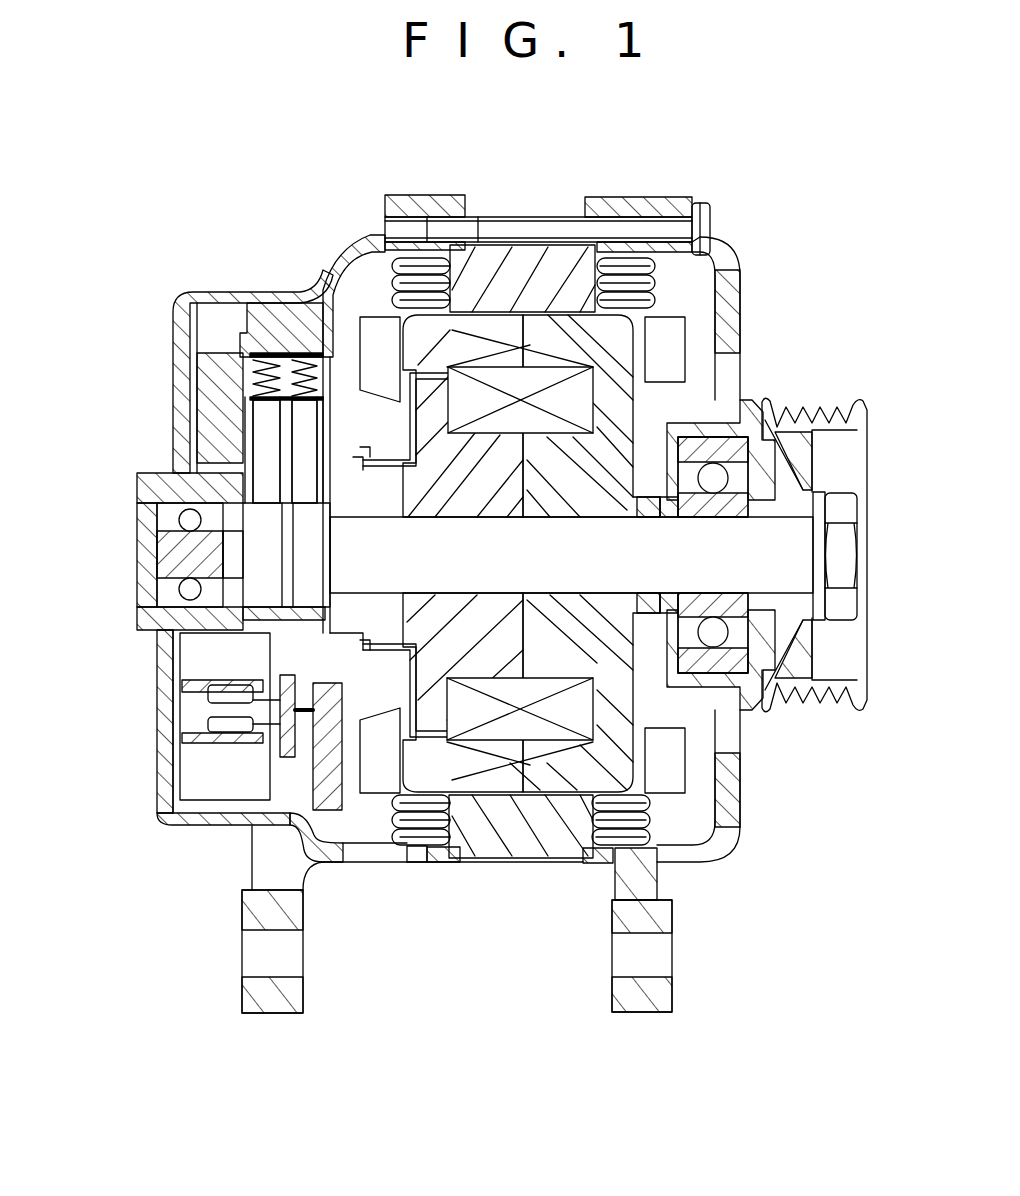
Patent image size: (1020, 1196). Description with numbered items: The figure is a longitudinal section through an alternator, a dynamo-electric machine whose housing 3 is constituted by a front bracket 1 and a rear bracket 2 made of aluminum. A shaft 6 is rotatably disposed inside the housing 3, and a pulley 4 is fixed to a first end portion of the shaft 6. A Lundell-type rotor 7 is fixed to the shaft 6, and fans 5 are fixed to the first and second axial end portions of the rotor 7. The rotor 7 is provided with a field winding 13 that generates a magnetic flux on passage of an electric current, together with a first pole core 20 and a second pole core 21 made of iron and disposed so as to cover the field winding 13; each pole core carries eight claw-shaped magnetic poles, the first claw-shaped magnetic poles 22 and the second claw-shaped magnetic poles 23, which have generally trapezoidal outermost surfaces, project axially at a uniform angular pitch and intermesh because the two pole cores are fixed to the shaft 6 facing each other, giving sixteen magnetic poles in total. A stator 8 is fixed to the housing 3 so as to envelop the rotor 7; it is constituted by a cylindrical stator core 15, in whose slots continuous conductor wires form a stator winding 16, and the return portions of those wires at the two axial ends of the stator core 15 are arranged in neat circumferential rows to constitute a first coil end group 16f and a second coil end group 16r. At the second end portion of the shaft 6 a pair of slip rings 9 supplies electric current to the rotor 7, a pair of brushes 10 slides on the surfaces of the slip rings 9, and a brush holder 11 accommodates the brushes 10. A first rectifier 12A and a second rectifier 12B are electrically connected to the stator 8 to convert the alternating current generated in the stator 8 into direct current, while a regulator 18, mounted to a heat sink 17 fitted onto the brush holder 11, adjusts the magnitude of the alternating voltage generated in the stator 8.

The front bracket 1 is at (745, 290).
The rear bracket 2 is at (312, 280).
The housing 3 is at (742, 829).
The pulley 4 is at (838, 400).
The fans 5 is at (695, 338).
The shaft 6 is at (805, 557).
The rotor 7 is at (531, 453).
The stator 8 is at (521, 598).
The slip rings 9 is at (305, 560).
The brushes 10 is at (305, 450).
The brush holder 11 is at (278, 333).
The first rectifier 12A is at (190, 713).
The second rectifier 12B is at (211, 746).
The field winding 13 is at (533, 370).
The stator core 15 is at (525, 848).
The stator winding 16 is at (521, 591).
The second coil end group 16r is at (410, 843).
The first coil end group 16f is at (605, 863).
The heat sink 17 is at (210, 365).
The regulator 18 is at (230, 345).
The first pole core 20 is at (577, 328).
The second pole core 21 is at (455, 340).
The first claw-shaped magnetic poles 22 is at (600, 325).
The second claw-shaped magnetic poles 23 is at (432, 320).